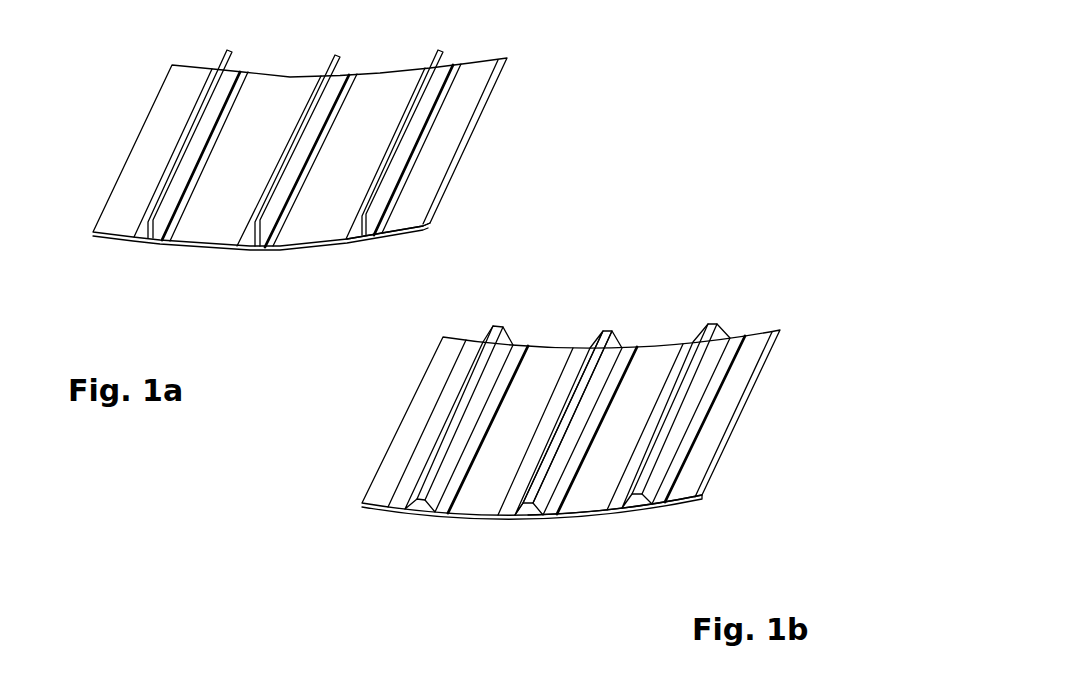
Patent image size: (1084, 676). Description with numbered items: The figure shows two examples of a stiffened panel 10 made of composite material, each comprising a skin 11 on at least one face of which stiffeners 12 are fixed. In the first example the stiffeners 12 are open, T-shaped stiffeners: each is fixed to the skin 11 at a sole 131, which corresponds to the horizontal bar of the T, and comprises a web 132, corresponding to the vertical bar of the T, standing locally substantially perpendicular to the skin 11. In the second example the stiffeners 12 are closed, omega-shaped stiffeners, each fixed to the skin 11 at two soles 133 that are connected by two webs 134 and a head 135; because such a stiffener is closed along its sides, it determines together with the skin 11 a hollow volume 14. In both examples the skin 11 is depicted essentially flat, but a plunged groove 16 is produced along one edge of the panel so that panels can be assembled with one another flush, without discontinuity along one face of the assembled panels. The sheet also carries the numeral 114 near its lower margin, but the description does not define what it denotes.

In FIG. 1a, the stiffened panel 10 is at (275, 195).
In FIG. 1b, the stiffened panel 10 is at (548, 430).
In FIG. 1a, the skin 11 is at (123, 186).
In FIG. 1b, the skin 11 is at (394, 458).
In FIG. 1a, the stiffeners 12 is at (276, 194).
In FIG. 1b, the stiffeners 12 is at (549, 429).
In FIG. 1a, the sole 131 is at (291, 190).
In FIG. 1a, the web 132 is at (270, 212).
In FIG. 1b, the soles 133 is at (561, 488).
In FIG. 1b, the webs 134 is at (615, 339).
In FIG. 1b, the head 135 is at (603, 331).
In FIG. 1b, the hollow volume 14 is at (524, 512).
In FIG. 1a, the plunged groove 16 is at (423, 229).
In FIG. 1b, the plunged groove 16 is at (699, 500).
In FIG. 1b, the reference mark 114 is at (223, 664).